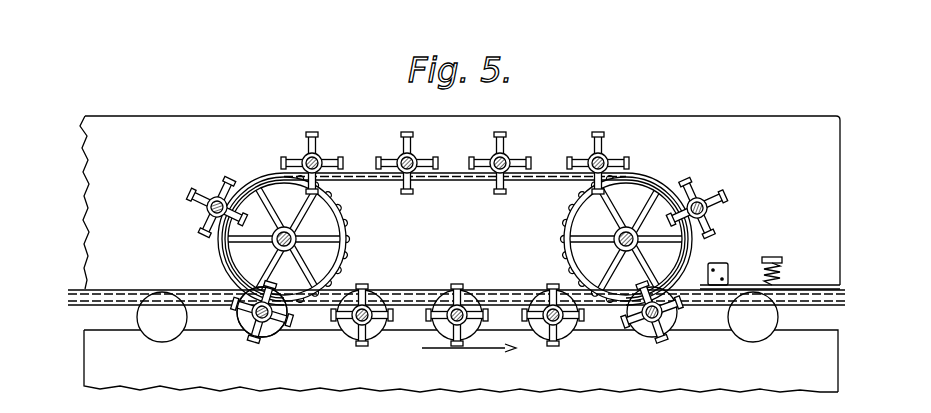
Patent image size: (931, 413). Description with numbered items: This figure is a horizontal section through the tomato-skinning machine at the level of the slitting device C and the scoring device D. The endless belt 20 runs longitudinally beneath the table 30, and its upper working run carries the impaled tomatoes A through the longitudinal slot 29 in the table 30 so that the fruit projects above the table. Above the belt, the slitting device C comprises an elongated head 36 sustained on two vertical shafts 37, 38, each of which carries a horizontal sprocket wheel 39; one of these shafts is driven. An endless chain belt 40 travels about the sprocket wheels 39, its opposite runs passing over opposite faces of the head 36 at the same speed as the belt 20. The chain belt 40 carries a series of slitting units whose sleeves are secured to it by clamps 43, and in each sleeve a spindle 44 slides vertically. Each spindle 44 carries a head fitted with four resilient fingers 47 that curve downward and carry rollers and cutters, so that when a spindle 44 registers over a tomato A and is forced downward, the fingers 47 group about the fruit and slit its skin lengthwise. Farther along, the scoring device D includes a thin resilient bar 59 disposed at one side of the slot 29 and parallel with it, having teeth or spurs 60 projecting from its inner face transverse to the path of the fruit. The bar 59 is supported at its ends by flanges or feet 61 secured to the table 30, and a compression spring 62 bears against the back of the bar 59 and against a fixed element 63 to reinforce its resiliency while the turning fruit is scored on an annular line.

The endless belt 20 is at (124, 290).
The longitudinal slot 29 is at (110, 330).
The table 30 is at (460, 202).
The elongated head 36 is at (420, 284).
The vertical shaft 37 is at (298, 239).
The vertical shaft 38 is at (613, 243).
The sprocket wheel 39 is at (335, 239).
The endless belt 40 is at (446, 173).
The clamp 43 is at (372, 294).
The spindle 44 is at (257, 318).
The resilient finger 47 is at (263, 323).
The bar 59 is at (737, 291).
The teeth or spurs 60 is at (813, 289).
The flanges or feet 61 is at (718, 263).
The compression spring 62 is at (781, 272).
The fixed element 63 is at (780, 257).
The tomato A is at (172, 333).
The slitting device C is at (444, 235).
The scoring or cutting device D is at (766, 242).